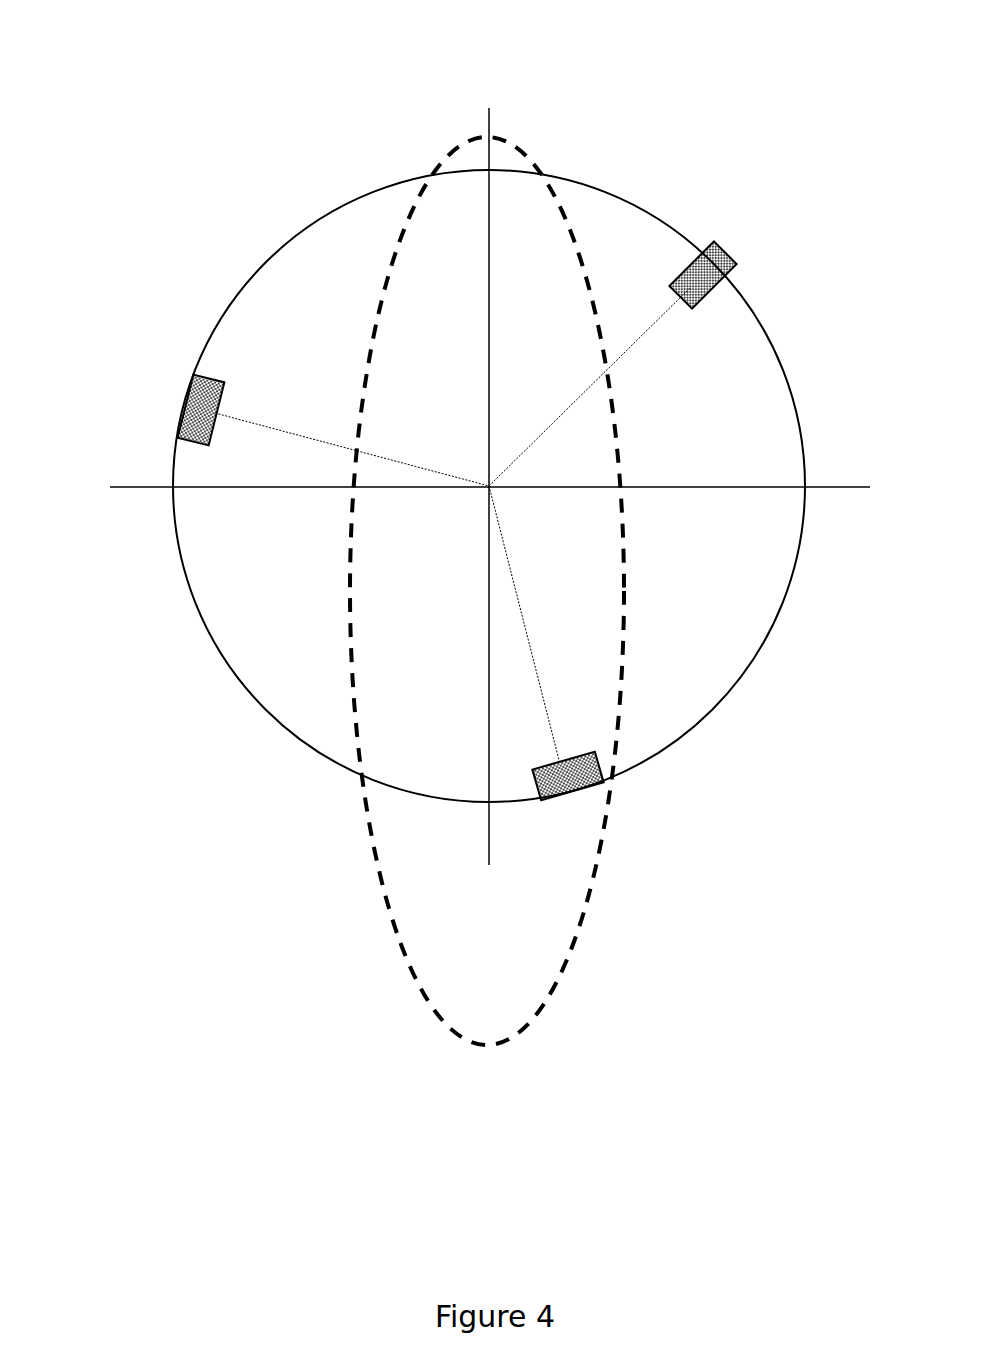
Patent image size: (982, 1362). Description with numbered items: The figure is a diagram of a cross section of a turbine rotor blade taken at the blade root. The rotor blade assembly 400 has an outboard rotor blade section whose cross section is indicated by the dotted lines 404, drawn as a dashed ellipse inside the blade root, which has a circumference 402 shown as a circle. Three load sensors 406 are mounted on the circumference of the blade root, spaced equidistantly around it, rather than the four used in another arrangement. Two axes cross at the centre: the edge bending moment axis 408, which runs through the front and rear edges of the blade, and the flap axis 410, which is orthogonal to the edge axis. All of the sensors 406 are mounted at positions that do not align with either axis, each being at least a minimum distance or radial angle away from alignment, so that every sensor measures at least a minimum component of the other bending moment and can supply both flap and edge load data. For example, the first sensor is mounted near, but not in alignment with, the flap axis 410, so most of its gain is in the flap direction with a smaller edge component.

The rotor blade assembly 400 is at (253, 137).
The circumference 402 is at (612, 192).
The dotted lines 404 is at (397, 921).
The sensors 406 is at (191, 380).
The edge bending moment axis 408 is at (485, 116).
The flap axis 410 is at (138, 488).